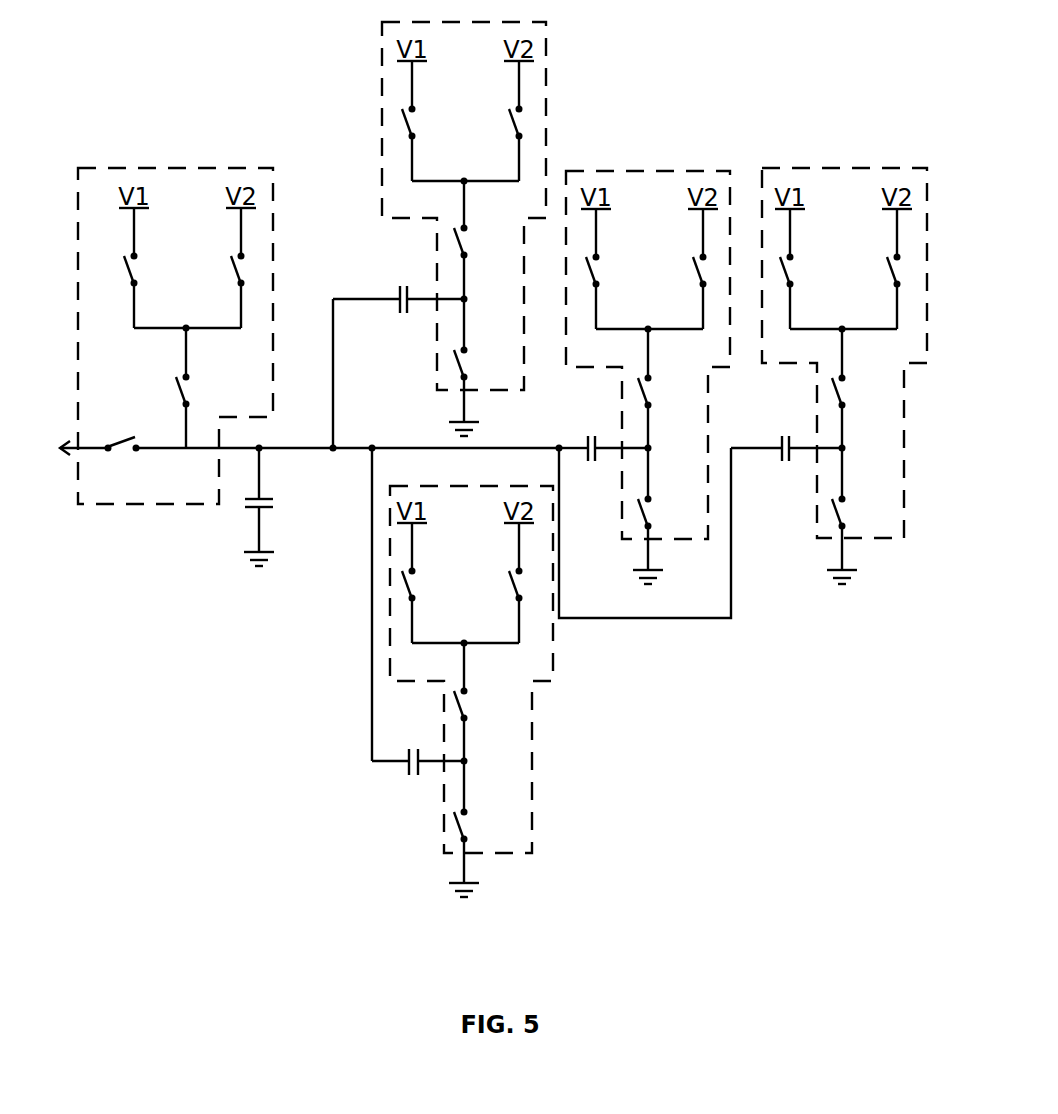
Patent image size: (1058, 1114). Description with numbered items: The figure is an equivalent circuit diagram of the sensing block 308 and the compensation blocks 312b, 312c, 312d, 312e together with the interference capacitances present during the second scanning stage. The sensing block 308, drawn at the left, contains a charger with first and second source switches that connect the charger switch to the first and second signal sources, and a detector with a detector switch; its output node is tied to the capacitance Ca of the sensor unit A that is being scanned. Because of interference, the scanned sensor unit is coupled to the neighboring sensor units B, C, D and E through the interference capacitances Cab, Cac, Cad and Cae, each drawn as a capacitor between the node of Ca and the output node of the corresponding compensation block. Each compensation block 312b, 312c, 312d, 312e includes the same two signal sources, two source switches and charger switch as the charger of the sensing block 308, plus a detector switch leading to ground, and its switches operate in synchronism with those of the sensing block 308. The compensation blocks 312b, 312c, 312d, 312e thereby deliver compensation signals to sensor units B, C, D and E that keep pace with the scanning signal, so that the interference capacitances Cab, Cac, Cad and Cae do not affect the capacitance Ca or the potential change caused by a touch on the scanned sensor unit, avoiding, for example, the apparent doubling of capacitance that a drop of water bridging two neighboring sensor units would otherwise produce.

The sensing block 308 is at (172, 167).
The compensation block 312b is at (545, 133).
The compensation block 312c is at (640, 172).
The compensation block 312d is at (533, 758).
The compensation block 312e is at (836, 170).
The capacitance of sensor unit A Ca is at (279, 506).
The interference capacitance Cab is at (397, 355).
The interference capacitance Cac is at (602, 434).
The interference capacitance Cad is at (417, 628).
The interference capacitance Cae is at (786, 467).